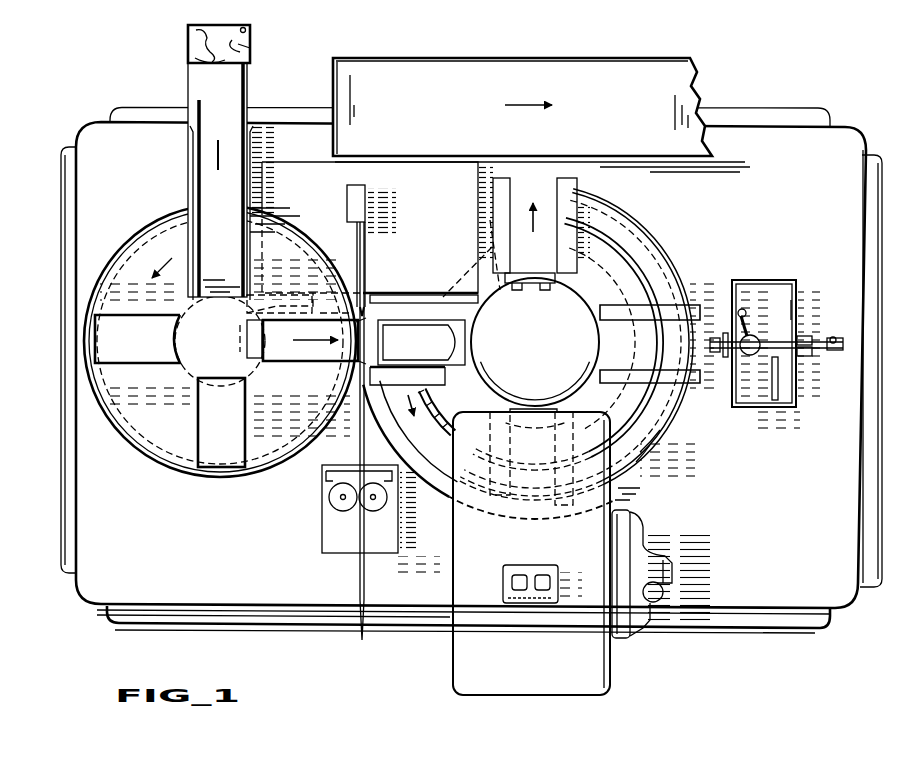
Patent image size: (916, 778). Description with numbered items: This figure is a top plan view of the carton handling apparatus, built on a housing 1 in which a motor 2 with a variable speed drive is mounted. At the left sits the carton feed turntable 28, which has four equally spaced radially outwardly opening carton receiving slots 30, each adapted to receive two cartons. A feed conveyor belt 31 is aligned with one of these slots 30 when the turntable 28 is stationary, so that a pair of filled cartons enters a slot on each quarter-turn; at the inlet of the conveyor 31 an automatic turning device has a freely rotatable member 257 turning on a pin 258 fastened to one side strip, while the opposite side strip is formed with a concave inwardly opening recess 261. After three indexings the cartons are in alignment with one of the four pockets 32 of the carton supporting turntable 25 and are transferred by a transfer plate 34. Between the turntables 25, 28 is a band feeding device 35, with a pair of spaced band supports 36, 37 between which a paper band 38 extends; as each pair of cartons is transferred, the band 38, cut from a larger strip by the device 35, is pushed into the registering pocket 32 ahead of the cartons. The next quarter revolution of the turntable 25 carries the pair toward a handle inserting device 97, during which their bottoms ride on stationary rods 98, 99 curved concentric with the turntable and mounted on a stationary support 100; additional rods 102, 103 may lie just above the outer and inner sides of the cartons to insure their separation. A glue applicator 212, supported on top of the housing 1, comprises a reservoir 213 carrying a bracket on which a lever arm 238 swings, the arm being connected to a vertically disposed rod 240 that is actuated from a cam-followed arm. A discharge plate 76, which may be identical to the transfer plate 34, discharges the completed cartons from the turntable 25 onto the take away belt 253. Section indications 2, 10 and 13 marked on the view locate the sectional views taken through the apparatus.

The housing 1 is at (75, 605).
The motor 2 is at (598, 397).
The section line 10- 10 is at (697, 343).
The section line 13- 13 is at (237, 355).
The carton supporting turntable 25 is at (607, 270).
The carton feed turntable 28 is at (145, 450).
The carton receiving pockets or slots 30 is at (95, 345).
The feed conveyor belt 31 is at (247, 90).
The pockets or slots 32 is at (537, 183).
The transfer plate 34 is at (258, 355).
The band feeding device 35 is at (320, 543).
The band support 36 is at (360, 438).
The band support 37 is at (365, 256).
The band 38 is at (357, 348).
The discharge plate 76 is at (531, 275).
The handle inserting device 97 is at (634, 490).
The stationary rod 98 is at (448, 425).
The stationary rod 99 is at (446, 388).
The stationary support 100 is at (430, 355).
The stationary rod 102 is at (657, 422).
The stationary rod 103 is at (680, 447).
The glue applicator 212 is at (776, 273).
The reservoir 213 is at (796, 303).
The lever arm 238 is at (788, 336).
The rod 240 is at (846, 327).
The take away belt 253 is at (628, 108).
The freely rotatable member 257 is at (250, 48).
The pin 258 is at (247, 31).
The recess 261 is at (190, 41).